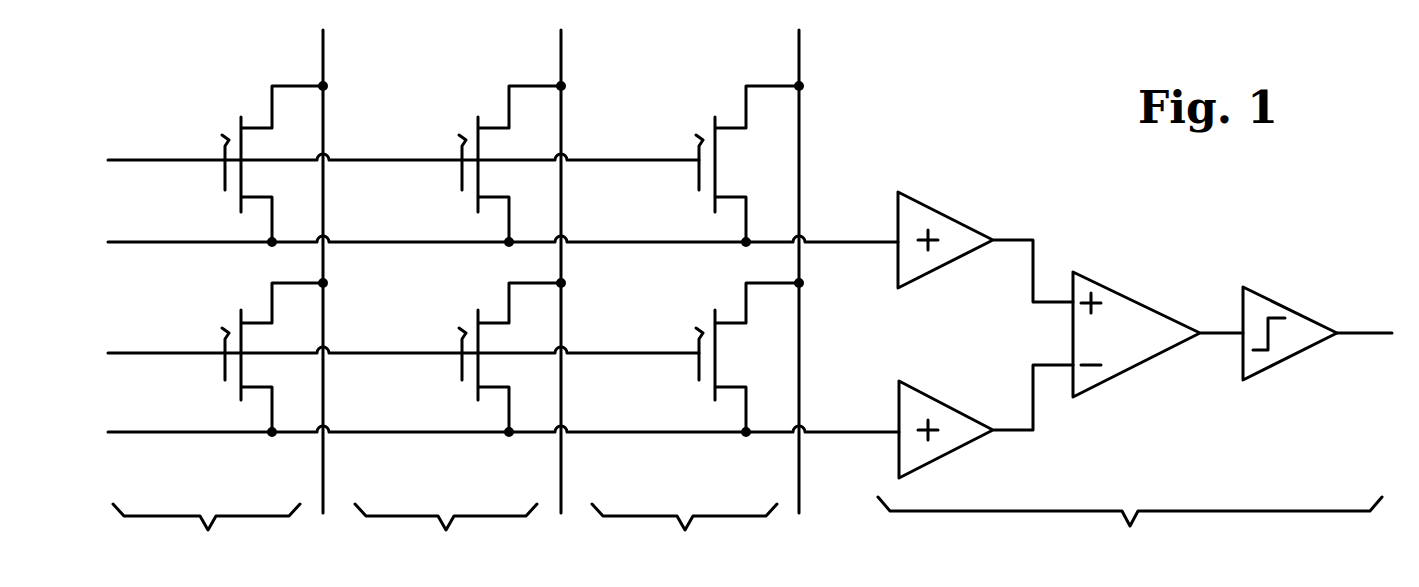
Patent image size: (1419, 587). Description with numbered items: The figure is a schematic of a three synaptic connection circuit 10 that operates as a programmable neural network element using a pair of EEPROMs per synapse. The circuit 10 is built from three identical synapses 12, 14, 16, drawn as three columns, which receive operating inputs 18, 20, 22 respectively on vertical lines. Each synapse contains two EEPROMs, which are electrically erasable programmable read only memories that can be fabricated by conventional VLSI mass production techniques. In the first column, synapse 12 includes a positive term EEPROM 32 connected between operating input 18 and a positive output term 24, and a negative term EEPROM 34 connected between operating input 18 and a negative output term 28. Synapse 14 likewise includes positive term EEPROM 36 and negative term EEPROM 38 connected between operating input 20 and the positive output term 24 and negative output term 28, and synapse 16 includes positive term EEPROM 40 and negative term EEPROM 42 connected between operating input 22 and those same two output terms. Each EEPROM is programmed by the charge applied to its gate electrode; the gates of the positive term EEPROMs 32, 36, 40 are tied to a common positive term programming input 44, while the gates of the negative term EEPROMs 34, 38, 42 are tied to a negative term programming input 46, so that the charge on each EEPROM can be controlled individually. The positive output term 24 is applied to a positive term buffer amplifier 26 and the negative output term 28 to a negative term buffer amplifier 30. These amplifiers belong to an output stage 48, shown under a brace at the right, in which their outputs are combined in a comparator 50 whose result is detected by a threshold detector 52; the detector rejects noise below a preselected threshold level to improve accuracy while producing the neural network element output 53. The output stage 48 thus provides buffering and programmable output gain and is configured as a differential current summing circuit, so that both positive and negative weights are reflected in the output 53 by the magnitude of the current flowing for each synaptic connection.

The three synaptic connection circuit 10 is at (942, 84).
The synapse 12 is at (218, 316).
The synapse 14 is at (458, 318).
The synapse 16 is at (695, 317).
The operating input 18 is at (326, 67).
The operating input 20 is at (564, 64).
The operating input 22 is at (802, 64).
The positive output term 24 is at (835, 242).
The positive term buffer amplifier 26 is at (944, 212).
The negative output term 28 is at (835, 432).
The negative term buffer amplifier 30 is at (930, 396).
The positive term EEPROM 32 is at (241, 118).
The negative term EEPROM 34 is at (225, 376).
The positive term EEPROM 36 is at (478, 118).
The negative term EEPROM 38 is at (462, 376).
The positive term EEPROM 40 is at (715, 117).
The negative term EEPROM 42 is at (699, 376).
The positive term programming input 44 is at (140, 160).
The negative term programming input 46 is at (138, 353).
The output stage 48 is at (1135, 355).
The comparator 50 is at (1135, 298).
The threshold detector 52 is at (1290, 306).
The neural network element output 53 is at (1355, 334).